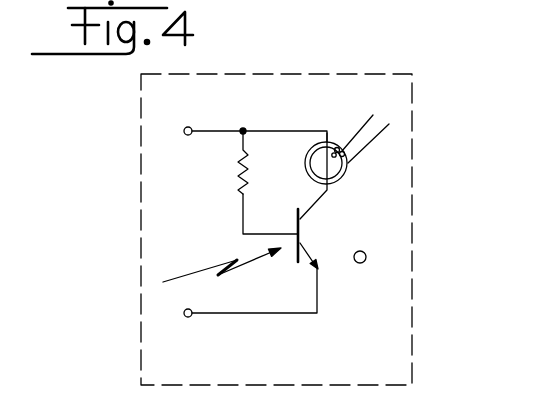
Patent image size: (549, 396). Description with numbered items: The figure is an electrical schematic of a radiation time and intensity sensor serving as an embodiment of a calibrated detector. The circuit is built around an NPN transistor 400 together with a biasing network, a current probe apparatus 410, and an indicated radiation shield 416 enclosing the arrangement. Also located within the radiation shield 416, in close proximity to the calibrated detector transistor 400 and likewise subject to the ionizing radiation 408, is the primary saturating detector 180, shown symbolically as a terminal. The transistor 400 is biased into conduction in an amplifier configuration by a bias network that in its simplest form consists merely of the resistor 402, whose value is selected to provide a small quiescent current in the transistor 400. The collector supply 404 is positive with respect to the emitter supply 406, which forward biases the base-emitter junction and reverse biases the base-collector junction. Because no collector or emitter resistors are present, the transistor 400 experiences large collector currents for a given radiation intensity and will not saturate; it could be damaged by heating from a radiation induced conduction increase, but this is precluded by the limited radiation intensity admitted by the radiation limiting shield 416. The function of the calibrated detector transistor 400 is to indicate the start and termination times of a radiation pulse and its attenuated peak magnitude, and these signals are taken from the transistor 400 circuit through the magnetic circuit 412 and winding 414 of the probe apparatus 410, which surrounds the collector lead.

The radiation shield 416 is at (283, 73).
The collector supply 404 is at (179, 119).
The resistor 402 is at (238, 178).
The NPN transistor 400 is at (314, 203).
The magnetic circuit 412 is at (340, 189).
The winding 414 is at (337, 145).
The current probe apparatus 410 is at (400, 187).
The ionizing radiation 408 is at (210, 266).
The emitter supply 406 is at (165, 328).
The primary saturating detector 180 is at (367, 258).